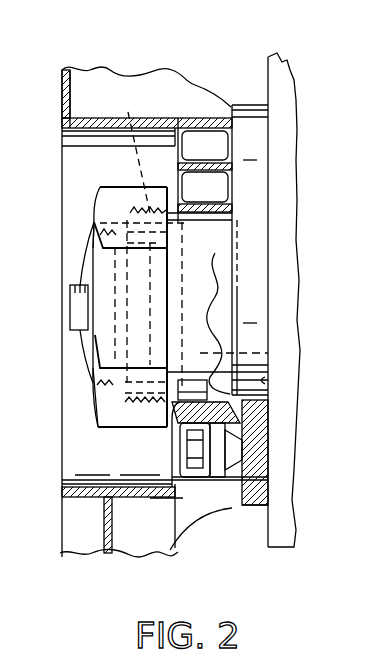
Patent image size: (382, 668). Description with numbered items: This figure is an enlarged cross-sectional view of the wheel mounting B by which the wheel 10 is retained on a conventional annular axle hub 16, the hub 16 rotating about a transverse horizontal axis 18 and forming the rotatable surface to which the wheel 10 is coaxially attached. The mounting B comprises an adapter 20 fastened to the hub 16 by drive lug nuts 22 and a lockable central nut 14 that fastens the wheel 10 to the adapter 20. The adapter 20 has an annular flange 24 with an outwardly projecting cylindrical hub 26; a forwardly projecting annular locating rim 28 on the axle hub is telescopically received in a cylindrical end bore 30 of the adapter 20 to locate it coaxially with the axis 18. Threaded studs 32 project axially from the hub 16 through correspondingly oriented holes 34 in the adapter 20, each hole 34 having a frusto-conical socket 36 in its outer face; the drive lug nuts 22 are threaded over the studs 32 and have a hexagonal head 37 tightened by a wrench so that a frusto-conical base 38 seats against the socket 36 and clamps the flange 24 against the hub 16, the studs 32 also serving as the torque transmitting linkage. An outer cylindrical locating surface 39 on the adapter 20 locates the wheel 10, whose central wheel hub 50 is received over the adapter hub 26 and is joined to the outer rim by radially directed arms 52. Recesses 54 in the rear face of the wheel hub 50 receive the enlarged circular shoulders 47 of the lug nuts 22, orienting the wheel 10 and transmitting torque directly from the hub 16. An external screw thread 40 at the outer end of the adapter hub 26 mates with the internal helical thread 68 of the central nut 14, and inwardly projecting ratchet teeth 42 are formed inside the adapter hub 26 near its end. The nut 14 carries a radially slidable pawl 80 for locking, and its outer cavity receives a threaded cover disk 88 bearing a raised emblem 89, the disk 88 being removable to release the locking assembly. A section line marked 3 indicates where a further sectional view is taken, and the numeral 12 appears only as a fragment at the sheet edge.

The wheel 10 is at (108, 66).
The housing 12 is at (379, 11).
The wheel mounting B is at (66, 184).
The external screw thread 40 is at (127, 153).
The annular flange 24 is at (258, 133).
The axle hub 16 is at (299, 188).
The adapter 20 is at (271, 162).
The central nut 14 is at (94, 212).
The internal helical thread 68 is at (105, 225).
The pawl 80 is at (131, 294).
The raised emblem 89 is at (70, 317).
The cover disk 88 is at (88, 342).
The radially directed arms 52 is at (108, 538).
The outer cylindrical locating surface 39 is at (215, 228).
The cylindrical hub 26 is at (213, 255).
The axis 18 is at (253, 306).
The annular locating rim 28 is at (260, 337).
The ratchet teeth 42 is at (268, 353).
The cylindrical end bore 30 is at (267, 377).
The wheel hub 50 is at (262, 381).
The drive lug nuts 22 is at (241, 425).
The threaded studs 32 is at (260, 445).
The holes 34 is at (260, 452).
The frusto-conical socket 36 is at (268, 491).
The frusto-conical base 38 is at (265, 500).
The enlarged circular shoulders 47 is at (223, 510).
The hexagonal head 37 is at (201, 540).
The recesses 54 is at (222, 515).
The section line 3- 3 is at (243, 23).